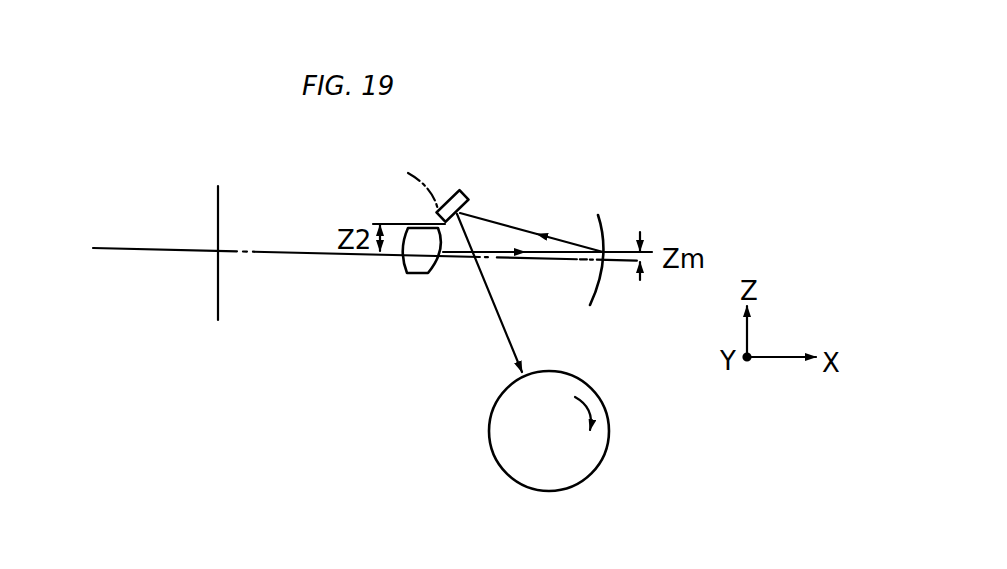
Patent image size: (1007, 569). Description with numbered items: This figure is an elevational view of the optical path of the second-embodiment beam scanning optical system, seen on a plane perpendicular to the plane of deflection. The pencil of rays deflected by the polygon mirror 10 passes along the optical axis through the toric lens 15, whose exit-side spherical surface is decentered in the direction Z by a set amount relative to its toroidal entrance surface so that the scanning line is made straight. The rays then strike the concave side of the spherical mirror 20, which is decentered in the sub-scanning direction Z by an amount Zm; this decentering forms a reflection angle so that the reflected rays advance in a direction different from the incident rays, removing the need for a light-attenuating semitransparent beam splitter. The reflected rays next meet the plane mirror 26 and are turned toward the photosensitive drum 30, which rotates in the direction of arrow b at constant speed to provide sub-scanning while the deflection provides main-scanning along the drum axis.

The polygon mirror 10 is at (220, 213).
The toric lens 15 is at (412, 273).
The spherical mirror 20 is at (597, 217).
The plane mirror 26 is at (462, 190).
The photosensitive drum 30 is at (490, 411).